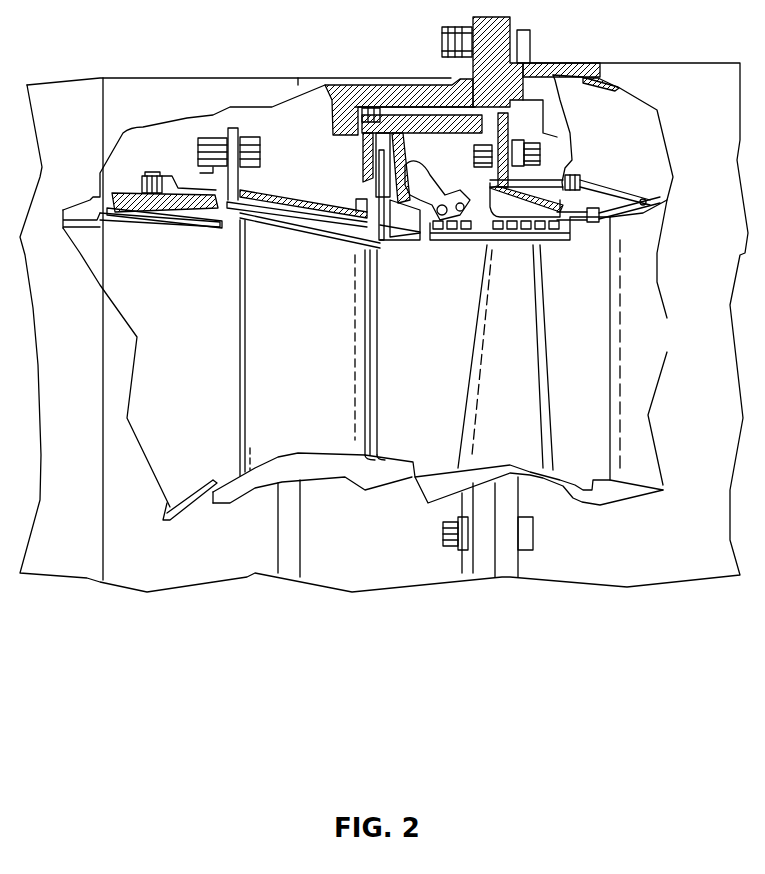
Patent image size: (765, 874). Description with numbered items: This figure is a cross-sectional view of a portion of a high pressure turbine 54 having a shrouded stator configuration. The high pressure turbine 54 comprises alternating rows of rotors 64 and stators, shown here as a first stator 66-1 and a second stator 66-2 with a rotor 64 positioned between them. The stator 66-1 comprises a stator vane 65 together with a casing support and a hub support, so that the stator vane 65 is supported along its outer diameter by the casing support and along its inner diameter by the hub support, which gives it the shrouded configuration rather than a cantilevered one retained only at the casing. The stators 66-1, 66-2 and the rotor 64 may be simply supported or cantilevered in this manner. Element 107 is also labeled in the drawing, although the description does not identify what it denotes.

The high pressure turbine 54 is at (333, 75).
The vane leading edge 107 is at (240, 310).
The stator 66-1 is at (413, 355).
The stator vane 65 is at (282, 410).
The rotor 64 is at (505, 357).
The stator 66-2 is at (639, 348).